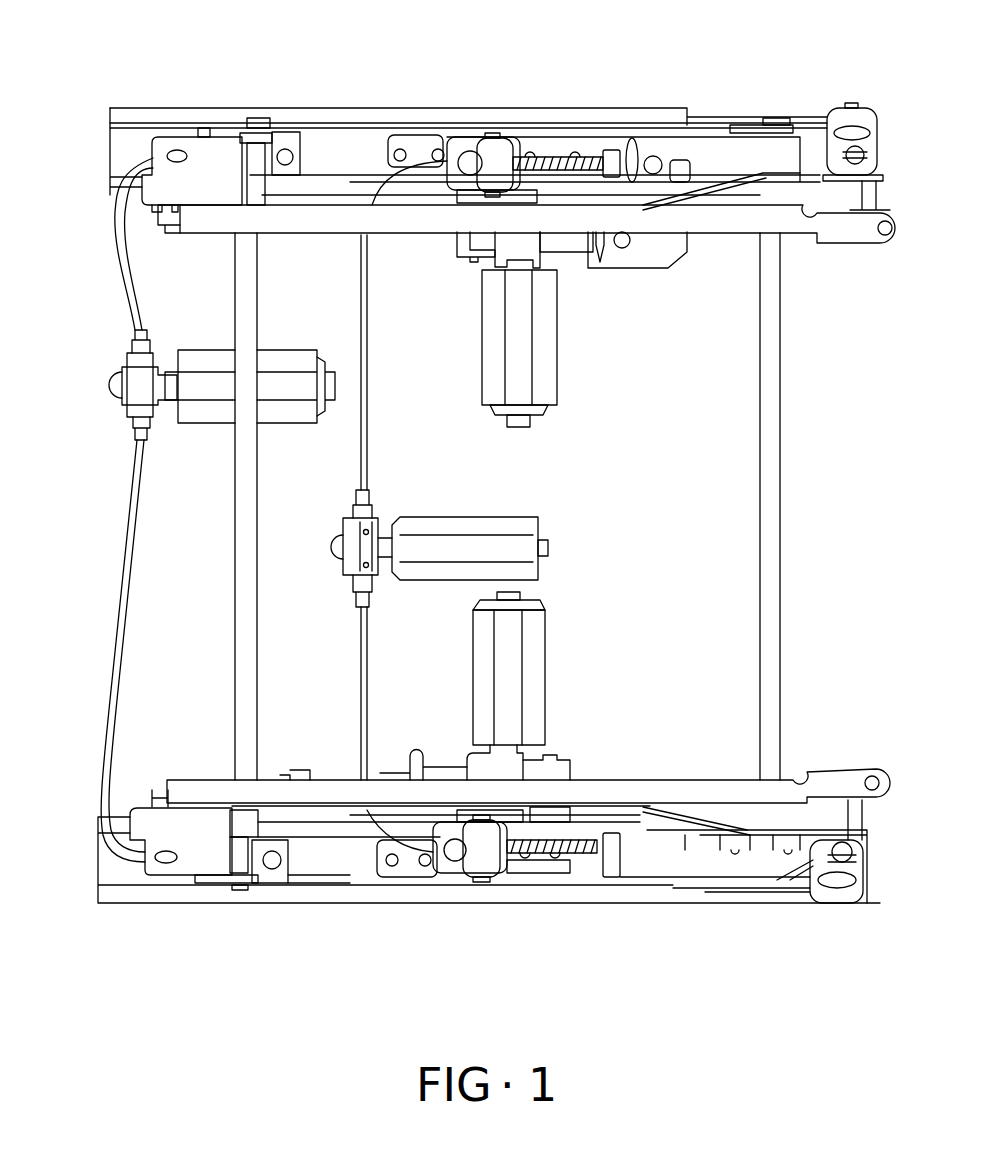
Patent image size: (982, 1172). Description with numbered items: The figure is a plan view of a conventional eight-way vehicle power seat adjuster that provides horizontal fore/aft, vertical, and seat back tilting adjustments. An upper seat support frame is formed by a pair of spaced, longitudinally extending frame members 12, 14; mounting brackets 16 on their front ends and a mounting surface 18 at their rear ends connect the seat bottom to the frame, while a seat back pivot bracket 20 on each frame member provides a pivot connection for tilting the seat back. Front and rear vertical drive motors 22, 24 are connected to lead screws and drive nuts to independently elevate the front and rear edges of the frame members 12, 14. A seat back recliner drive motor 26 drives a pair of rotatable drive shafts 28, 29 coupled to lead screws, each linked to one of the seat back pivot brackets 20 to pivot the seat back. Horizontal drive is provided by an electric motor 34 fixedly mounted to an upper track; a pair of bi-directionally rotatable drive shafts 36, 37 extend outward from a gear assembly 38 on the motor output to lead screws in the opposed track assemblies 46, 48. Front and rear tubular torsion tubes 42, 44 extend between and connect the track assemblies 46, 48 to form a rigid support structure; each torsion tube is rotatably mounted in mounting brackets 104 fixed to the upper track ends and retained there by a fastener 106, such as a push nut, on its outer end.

The seat support frame member 12 is at (598, 213).
The seat support frame member 14 is at (605, 780).
The mounting bracket 16 is at (198, 150).
The mounting surface 18 is at (848, 240).
The seat back pivot bracket 20 is at (827, 168).
The front vertical drive motor 22 is at (550, 363).
The rear vertical drive motor 24 is at (533, 670).
The seat back recliner drive motor 26 is at (512, 523).
The rotatable drive shaft 28 is at (364, 671).
The rotatable drive shaft 29 is at (368, 462).
The electric motor 34 is at (283, 413).
The bi-directionally rotatable drive shaft 36 is at (113, 726).
The bi-directionally rotatable drive shaft 37 is at (146, 293).
The gear assembly 38 is at (140, 405).
The front torsion tube 42 is at (253, 653).
The rear torsion tube 44 is at (772, 545).
The track assembly 46 is at (500, 159).
The track assembly 48 is at (323, 888).
The mounting bracket 104 is at (285, 133).
The fastener 106 is at (247, 120).